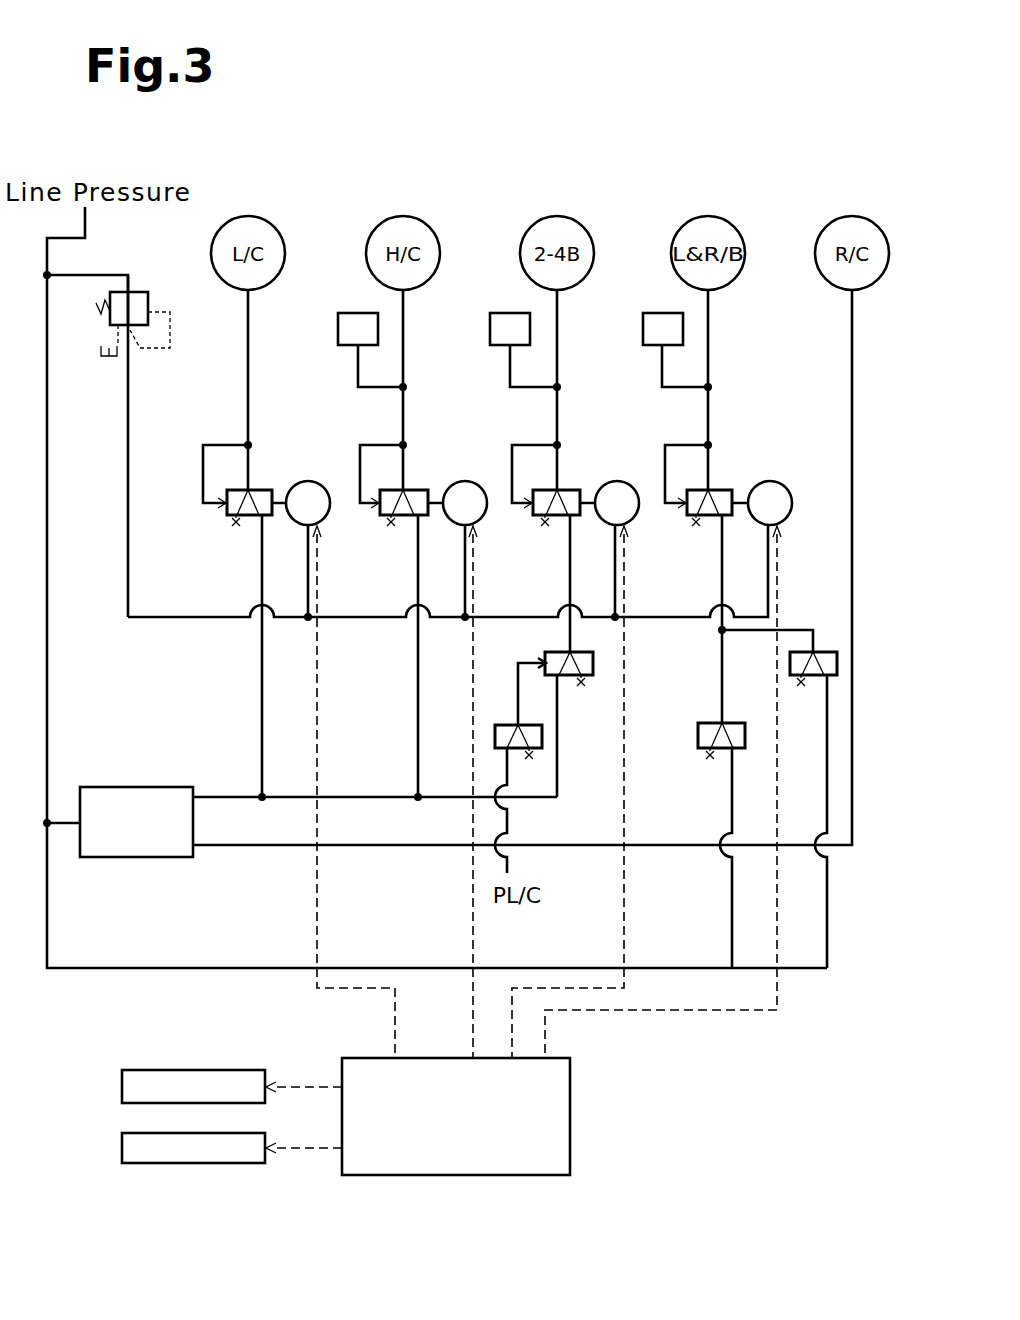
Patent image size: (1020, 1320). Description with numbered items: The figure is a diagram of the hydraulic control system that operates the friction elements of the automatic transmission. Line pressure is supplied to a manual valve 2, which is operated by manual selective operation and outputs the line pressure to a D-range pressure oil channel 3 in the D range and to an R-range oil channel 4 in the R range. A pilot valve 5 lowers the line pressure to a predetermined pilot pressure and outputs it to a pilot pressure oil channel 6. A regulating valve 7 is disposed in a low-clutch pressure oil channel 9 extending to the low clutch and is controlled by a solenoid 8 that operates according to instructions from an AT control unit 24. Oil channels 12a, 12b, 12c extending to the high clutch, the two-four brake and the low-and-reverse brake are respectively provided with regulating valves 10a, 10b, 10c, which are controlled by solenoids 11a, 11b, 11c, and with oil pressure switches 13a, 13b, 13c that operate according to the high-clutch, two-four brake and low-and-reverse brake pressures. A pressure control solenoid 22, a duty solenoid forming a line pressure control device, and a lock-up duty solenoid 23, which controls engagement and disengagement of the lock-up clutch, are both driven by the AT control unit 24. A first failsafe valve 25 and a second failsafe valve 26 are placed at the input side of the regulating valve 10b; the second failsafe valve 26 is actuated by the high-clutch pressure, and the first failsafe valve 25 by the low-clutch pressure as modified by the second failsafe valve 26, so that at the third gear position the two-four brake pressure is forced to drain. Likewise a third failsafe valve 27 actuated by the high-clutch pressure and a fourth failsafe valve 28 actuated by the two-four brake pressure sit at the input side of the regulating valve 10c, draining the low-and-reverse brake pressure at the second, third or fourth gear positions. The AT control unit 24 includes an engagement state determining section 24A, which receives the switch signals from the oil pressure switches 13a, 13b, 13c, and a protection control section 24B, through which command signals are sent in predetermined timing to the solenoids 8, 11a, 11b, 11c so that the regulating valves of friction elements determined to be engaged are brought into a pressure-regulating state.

The manual valve 2 is at (118, 787).
The D-range pressure oil channel 3 is at (348, 797).
The R-range oil channel 4 is at (348, 845).
The pilot valve 5 is at (138, 292).
The pilot pressure oil channel 6 is at (128, 500).
The regulating valve 7 is at (226, 516).
The solenoid 8 is at (308, 481).
The low-clutch pressure oil channel 9 is at (262, 672).
The regulating valve 10a is at (390, 516).
The regulating valve 10b is at (542, 516).
The regulating valve 10c is at (692, 516).
The solenoid 11a is at (465, 481).
The solenoid 11b is at (617, 481).
The solenoid 11c is at (770, 481).
The oil channel 12a is at (418, 672).
The oil channel 12b is at (570, 598).
The oil channel 12c is at (722, 598).
The oil pressure switch 13a is at (338, 328).
The oil pressure switch 13b is at (490, 328).
The oil pressure switch 13c is at (643, 328).
The pressure control solenoid 22 is at (160, 1070).
The lock-up duty solenoid 23 is at (155, 1163).
The AT control unit 24 is at (456, 1154).
The engagement state determining section 24A is at (456, 1154).
The protection control section 24B is at (378, 1175).
The first failsafe valve 25 is at (548, 654).
The second failsafe valve 26 is at (515, 725).
The third failsafe valve 27 is at (825, 652).
The fourth failsafe valve 28 is at (712, 723).